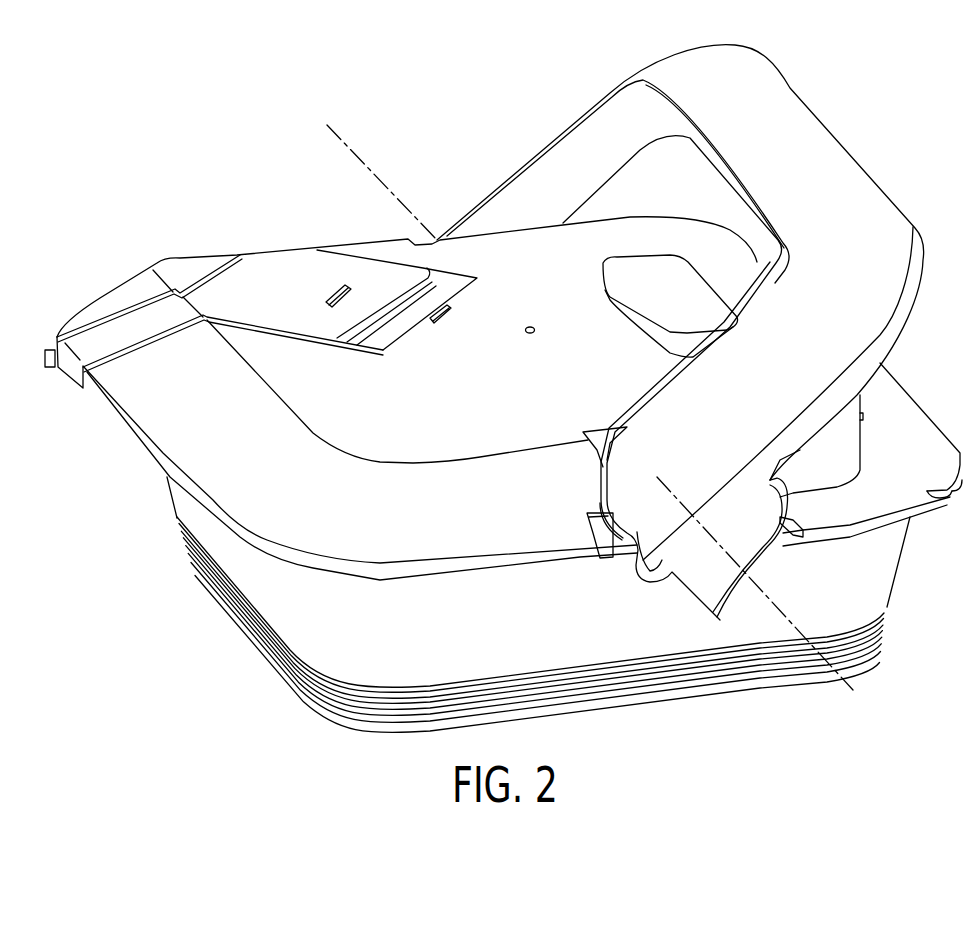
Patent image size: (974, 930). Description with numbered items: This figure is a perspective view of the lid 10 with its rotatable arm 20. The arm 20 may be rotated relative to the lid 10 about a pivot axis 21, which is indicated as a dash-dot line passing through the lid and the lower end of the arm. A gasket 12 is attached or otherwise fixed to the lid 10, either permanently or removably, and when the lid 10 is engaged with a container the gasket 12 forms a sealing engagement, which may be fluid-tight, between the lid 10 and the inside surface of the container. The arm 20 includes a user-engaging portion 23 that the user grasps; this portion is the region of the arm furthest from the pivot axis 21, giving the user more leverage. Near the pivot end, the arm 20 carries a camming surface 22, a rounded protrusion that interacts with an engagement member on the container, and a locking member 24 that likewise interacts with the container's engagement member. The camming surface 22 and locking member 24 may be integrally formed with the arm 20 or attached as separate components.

The lid 10 is at (170, 427).
The gasket 12 is at (266, 627).
The arm 20 is at (490, 192).
The pivot axis 21 is at (348, 150).
The camming surface 22 is at (657, 578).
The user-engaging portion 23 is at (863, 165).
The locking member 24 is at (772, 562).